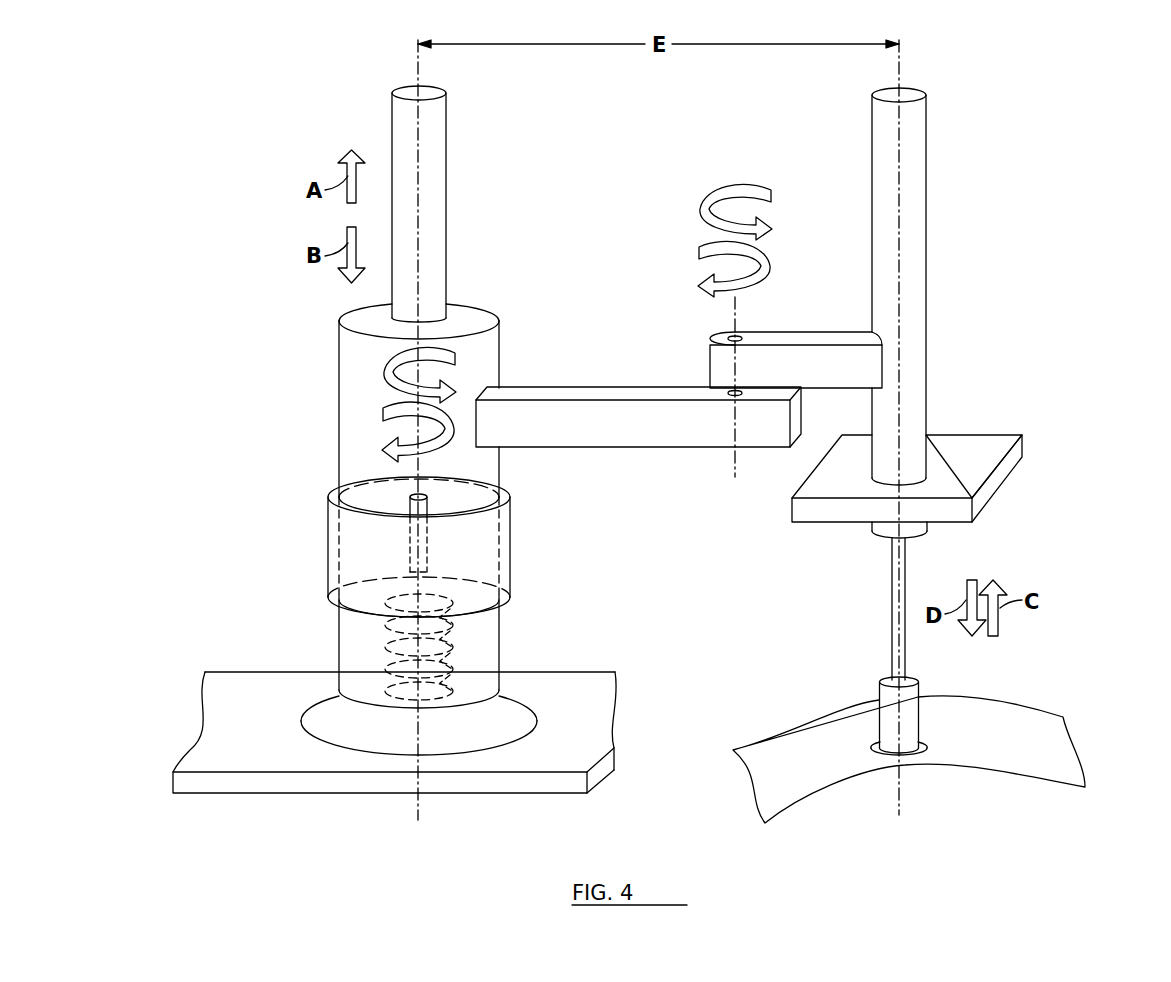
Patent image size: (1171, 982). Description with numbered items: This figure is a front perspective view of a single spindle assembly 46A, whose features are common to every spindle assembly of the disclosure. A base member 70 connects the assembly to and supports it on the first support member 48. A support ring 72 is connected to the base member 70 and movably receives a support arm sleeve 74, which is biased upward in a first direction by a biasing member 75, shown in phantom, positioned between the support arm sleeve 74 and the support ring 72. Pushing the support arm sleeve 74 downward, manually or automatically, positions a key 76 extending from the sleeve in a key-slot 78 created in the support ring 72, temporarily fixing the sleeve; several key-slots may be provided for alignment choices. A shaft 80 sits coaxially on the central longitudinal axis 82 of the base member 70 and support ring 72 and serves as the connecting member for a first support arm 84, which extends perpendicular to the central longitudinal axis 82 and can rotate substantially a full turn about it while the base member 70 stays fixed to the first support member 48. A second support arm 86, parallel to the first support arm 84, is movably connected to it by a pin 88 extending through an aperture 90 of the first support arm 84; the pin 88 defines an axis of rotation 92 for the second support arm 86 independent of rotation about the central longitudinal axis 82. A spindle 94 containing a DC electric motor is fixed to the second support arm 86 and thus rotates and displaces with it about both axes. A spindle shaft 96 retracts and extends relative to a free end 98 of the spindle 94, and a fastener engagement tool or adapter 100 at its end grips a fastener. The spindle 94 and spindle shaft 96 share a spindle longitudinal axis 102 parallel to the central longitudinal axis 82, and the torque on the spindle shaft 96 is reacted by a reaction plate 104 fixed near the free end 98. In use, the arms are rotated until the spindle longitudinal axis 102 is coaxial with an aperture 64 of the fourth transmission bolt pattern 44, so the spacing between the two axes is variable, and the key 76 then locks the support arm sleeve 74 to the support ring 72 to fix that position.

The central longitudinal axis 82 is at (417, 65).
The shaft 80 is at (392, 136).
The support arm sleeve 74 is at (368, 403).
The key 76 is at (410, 515).
The support ring 72 is at (338, 578).
The key-slot 78 is at (430, 558).
The biasing member 75 is at (458, 657).
The base member 70 is at (323, 713).
The first support member 48 is at (225, 695).
The first support arm 84 is at (588, 432).
The axis of rotation 92 is at (735, 472).
The aperture 90 is at (728, 393).
The pin 88 is at (728, 338).
The second support arm 86 is at (795, 340).
The spindle 94 is at (926, 188).
The spindle longitudinal axis 102 is at (905, 65).
The reaction plate 104 is at (973, 445).
The free end 98 is at (877, 536).
The spindle shaft 96 is at (892, 612).
The fourth transmission bolt pattern 44 is at (1038, 720).
The fastener engagement tool or adapter 100 is at (887, 720).
The aperture 64 is at (917, 757).
The spindle assembly 46A is at (1102, 85).